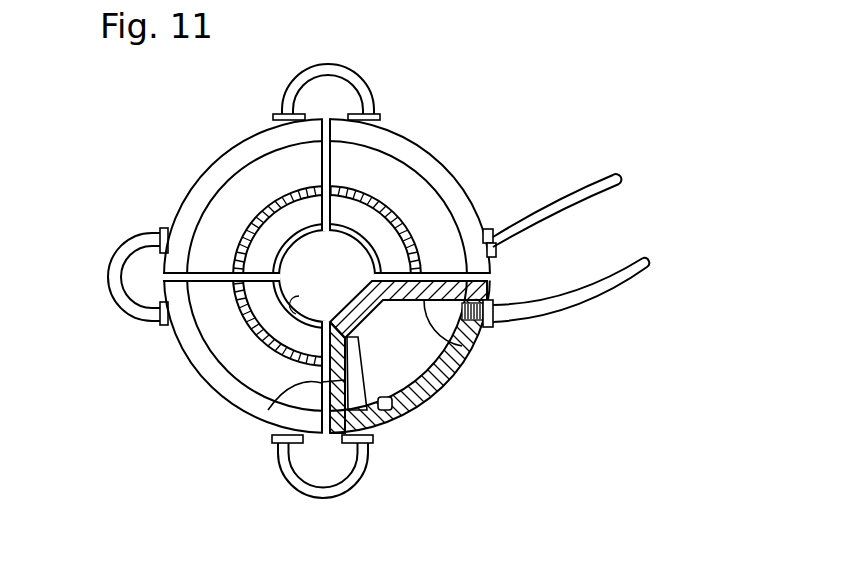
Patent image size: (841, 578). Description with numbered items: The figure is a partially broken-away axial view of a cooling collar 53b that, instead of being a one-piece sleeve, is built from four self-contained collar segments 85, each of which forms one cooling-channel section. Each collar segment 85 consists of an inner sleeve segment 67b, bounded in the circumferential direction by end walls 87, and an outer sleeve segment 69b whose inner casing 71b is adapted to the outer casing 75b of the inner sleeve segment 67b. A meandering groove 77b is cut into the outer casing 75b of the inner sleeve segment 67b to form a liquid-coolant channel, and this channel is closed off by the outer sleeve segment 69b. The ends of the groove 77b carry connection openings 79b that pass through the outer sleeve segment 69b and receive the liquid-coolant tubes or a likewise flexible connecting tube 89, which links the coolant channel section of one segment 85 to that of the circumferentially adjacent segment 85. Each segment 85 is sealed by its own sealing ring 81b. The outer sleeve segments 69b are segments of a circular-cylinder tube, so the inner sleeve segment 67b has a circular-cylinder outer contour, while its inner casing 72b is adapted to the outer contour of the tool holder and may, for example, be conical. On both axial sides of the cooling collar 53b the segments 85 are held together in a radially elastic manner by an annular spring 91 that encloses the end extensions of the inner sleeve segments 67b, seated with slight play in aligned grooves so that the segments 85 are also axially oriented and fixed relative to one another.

The cooling collar 53b is at (532, 132).
The inner sleeve segment 67b is at (402, 192).
The outer sleeve segment 69b is at (460, 178).
The inner casing 71b is at (388, 405).
The inner casing 72b is at (297, 306).
The outer casing 75b is at (413, 405).
The meandering groove 77b is at (450, 372).
The connection openings 79b is at (488, 283).
The sealing ring 81b is at (465, 234).
The collar segments 85 is at (405, 128).
The end walls 87 is at (412, 345).
The connecting tube 89 is at (342, 70).
The annular spring 91 is at (305, 318).